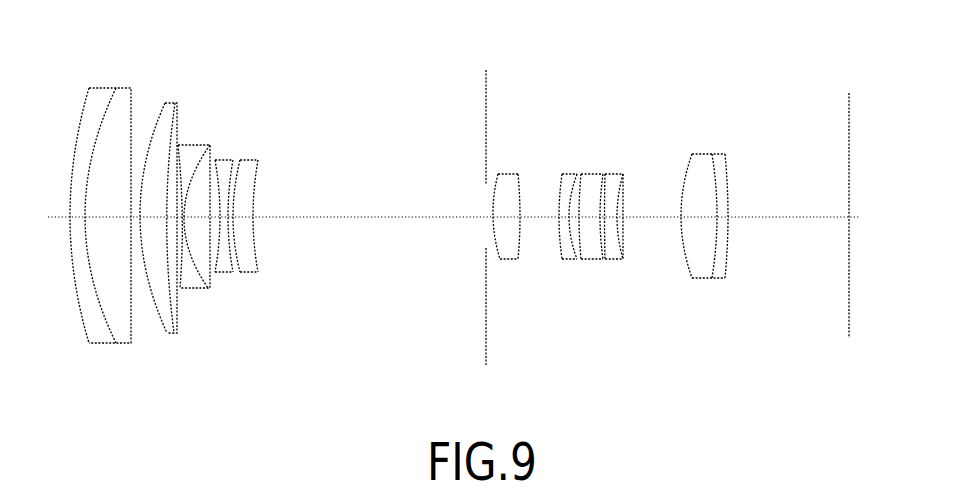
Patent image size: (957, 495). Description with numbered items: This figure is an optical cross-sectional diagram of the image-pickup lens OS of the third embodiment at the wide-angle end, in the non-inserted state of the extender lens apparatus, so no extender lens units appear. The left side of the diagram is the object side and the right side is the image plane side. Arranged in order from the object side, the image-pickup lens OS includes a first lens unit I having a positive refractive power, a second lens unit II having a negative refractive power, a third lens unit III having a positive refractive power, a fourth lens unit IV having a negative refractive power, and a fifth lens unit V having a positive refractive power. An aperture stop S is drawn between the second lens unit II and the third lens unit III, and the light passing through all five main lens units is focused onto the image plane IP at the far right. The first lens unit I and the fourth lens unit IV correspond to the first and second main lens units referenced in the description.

The image-pickup lens OS is at (410, 56).
The first lens unit I is at (90, 76).
The second lens unit II is at (183, 127).
The aperture stop S is at (484, 201).
The third lens unit III is at (500, 161).
The fourth lens unit IV is at (596, 161).
The fifth lens unit V is at (728, 139).
The image plane IP is at (856, 200).